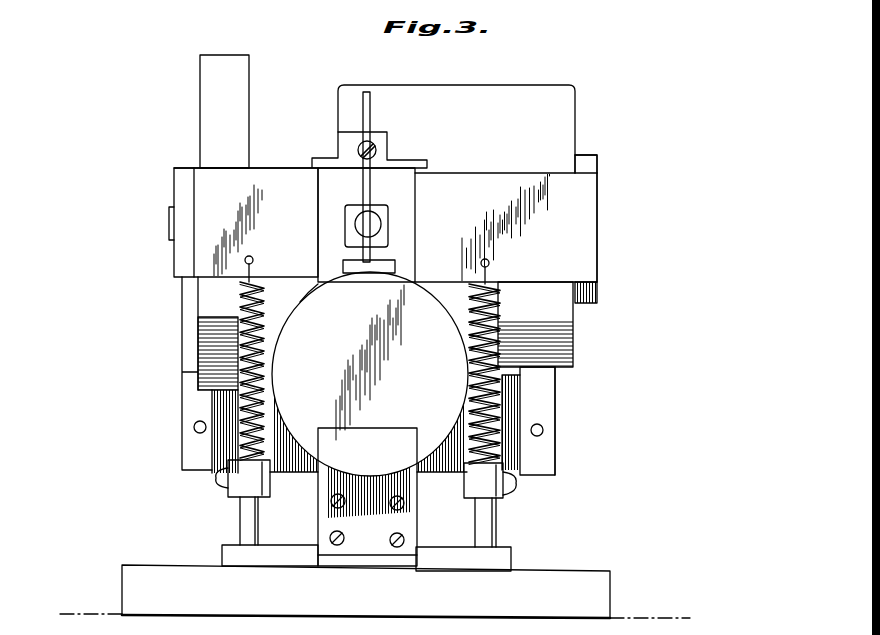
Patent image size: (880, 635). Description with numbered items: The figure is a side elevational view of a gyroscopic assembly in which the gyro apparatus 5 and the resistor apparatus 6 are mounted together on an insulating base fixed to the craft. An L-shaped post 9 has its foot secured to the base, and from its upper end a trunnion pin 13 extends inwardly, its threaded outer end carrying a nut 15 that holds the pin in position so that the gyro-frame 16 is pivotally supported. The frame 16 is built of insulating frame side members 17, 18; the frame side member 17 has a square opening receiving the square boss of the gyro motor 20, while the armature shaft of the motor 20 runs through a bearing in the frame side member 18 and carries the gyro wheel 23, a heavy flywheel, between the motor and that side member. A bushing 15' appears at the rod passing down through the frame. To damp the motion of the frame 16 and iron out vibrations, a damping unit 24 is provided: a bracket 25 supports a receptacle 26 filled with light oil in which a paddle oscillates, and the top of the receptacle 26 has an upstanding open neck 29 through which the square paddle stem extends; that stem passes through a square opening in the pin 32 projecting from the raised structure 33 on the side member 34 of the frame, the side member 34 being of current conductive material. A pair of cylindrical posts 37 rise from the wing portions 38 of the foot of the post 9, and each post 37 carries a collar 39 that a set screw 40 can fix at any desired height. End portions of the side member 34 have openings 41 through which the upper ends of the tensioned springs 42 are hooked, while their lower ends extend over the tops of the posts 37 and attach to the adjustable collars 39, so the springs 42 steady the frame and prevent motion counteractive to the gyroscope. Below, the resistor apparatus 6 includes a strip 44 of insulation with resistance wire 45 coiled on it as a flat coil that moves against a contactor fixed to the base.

The gyro apparatus 5 is at (601, 156).
The resistor apparatus 6 is at (558, 421).
The L-shaped post 9 is at (410, 205).
The trunnion pin 13 is at (355, 223).
The nut 15 is at (388, 177).
The rod guide housing 15' is at (358, 211).
The gyro-frame 16 is at (601, 198).
The frame side member 17 is at (590, 164).
The frame side member 18 is at (178, 186).
The gyro motor 20 is at (560, 115).
The gyro wheel 23 is at (205, 108).
The damping unit 24 is at (415, 286).
The bracket 25 is at (405, 525).
The receptacle 26 is at (307, 296).
The upstanding open neck 29 is at (395, 262).
The pin 32 is at (377, 149).
The raised structure 33 is at (390, 158).
The side member 34 is at (582, 225).
The cylindrical post 37 is at (243, 527).
The wing portion 38 is at (282, 560).
The collar 39 is at (243, 490).
The set screw 40 is at (216, 478).
The opening 41 is at (254, 259).
The tensioned spring 42 is at (238, 328).
The strip 44 is at (540, 401).
The resistance wire 45 is at (222, 443).